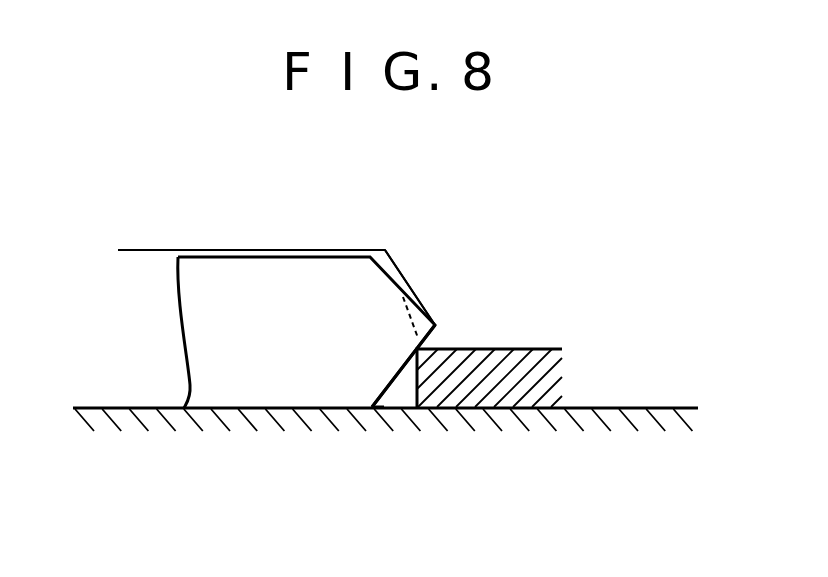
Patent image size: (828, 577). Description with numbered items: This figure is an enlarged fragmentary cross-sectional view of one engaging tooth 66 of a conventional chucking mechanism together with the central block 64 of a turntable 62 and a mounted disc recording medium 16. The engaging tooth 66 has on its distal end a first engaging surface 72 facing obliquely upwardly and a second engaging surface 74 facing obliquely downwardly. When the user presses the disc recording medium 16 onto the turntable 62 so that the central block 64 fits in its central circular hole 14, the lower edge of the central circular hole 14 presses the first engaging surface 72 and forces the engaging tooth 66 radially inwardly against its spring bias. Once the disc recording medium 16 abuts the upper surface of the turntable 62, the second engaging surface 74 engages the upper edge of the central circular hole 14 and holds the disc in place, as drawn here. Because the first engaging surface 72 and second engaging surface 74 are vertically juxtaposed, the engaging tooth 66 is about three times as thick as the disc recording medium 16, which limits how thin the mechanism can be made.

The central circular hole 14 is at (398, 372).
The disc recording medium 16 is at (535, 352).
The turntable 62 is at (651, 410).
The central block 64 is at (152, 250).
The engaging tooth 66 is at (308, 280).
The first engaging surface 72 is at (417, 299).
The second engaging surface 74 is at (391, 372).